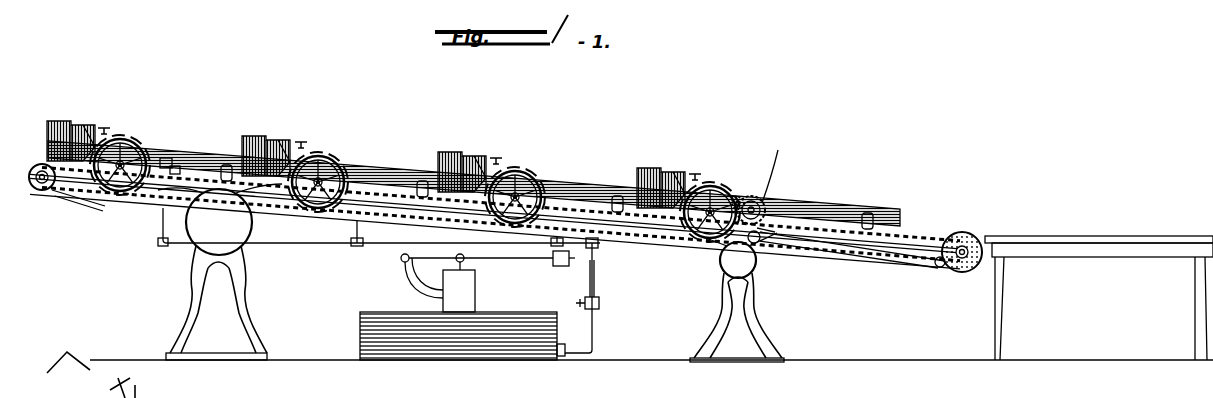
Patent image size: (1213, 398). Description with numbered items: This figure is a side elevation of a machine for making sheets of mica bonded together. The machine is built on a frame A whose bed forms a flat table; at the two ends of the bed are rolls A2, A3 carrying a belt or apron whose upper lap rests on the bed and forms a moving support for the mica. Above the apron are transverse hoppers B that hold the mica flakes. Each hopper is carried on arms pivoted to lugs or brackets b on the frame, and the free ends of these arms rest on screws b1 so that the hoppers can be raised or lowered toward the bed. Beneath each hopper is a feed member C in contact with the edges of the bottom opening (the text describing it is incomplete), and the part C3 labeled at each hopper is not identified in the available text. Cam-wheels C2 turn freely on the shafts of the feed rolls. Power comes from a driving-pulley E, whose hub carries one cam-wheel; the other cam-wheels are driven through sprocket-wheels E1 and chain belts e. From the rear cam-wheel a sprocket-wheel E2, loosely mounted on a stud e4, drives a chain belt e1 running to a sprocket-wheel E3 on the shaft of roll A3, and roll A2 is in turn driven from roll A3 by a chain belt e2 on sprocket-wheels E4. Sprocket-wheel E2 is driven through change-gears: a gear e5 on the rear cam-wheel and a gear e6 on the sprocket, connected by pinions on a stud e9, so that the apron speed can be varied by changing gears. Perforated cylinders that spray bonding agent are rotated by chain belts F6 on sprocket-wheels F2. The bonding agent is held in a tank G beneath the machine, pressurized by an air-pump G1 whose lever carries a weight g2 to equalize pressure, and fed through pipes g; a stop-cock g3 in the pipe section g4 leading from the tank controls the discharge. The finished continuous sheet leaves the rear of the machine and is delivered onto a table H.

The frame A is at (397, 197).
The roll A2 is at (88, 198).
The roll A3 is at (967, 233).
The hopper B is at (48, 123).
The lugs or brackets b is at (228, 166).
The screw b1 is at (103, 127).
The trough C is at (192, 155).
The cam-wheel C2 is at (112, 135).
The chute C3 is at (63, 158).
The driving-pulley E is at (132, 153).
The sprocket-wheel E1 is at (140, 155).
The sprocket-wheel E2 is at (770, 194).
The sprocket-wheel E3 is at (923, 263).
The sprocket-wheel E4 is at (55, 185).
The chain belt e is at (387, 168).
The chain belt e1 is at (917, 227).
The chain belt e2 is at (909, 228).
The stud e4 is at (762, 200).
The gear e5 is at (741, 199).
The gear e6 is at (768, 223).
The stud e9 is at (778, 150).
The sprocket-wheel F2 is at (175, 166).
The chain belt F6 is at (172, 158).
The tank G is at (400, 330).
The air-pump G1 is at (465, 290).
The pipe g is at (158, 228).
The weight g2 is at (563, 267).
The stop-cock g3 is at (598, 308).
The section of pipe g4 is at (597, 288).
The table H is at (1084, 236).